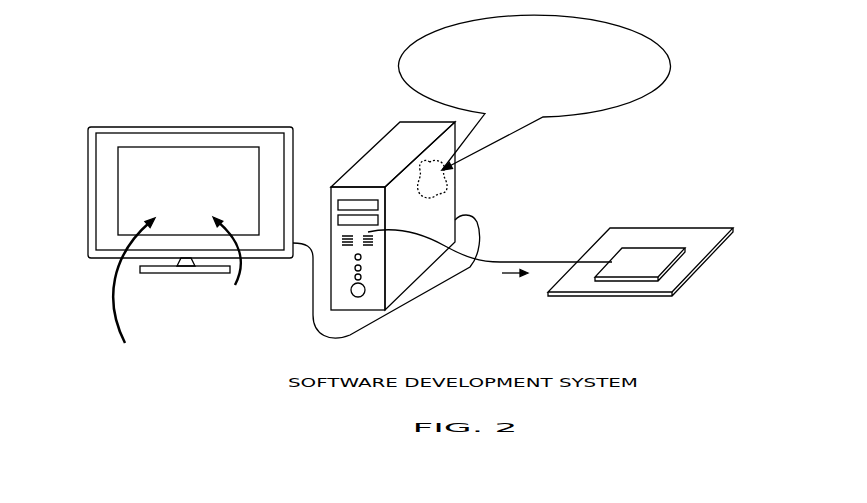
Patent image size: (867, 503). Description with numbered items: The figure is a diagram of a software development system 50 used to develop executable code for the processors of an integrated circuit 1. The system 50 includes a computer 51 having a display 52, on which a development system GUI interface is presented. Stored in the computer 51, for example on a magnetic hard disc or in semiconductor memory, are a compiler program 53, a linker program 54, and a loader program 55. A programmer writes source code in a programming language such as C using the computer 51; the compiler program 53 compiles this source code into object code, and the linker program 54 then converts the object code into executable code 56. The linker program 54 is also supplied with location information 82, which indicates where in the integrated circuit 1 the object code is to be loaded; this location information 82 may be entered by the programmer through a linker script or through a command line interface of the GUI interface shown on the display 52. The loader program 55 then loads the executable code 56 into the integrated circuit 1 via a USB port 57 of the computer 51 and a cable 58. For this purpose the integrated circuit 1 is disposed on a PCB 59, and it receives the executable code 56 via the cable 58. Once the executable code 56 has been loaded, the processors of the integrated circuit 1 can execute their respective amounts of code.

The software development system 50 is at (261, 54).
The computer 51 is at (385, 132).
The display 52 is at (184, 126).
The compiler program 53 is at (535, 106).
The linker program 54 is at (515, 65).
The loader program 55 is at (519, 87).
The executable code 56 is at (508, 277).
The USB port 57 is at (366, 224).
The cable 58 is at (520, 261).
The PCB 59 is at (612, 294).
The integrated circuit 1 is at (632, 255).
The location information 82 is at (217, 277).